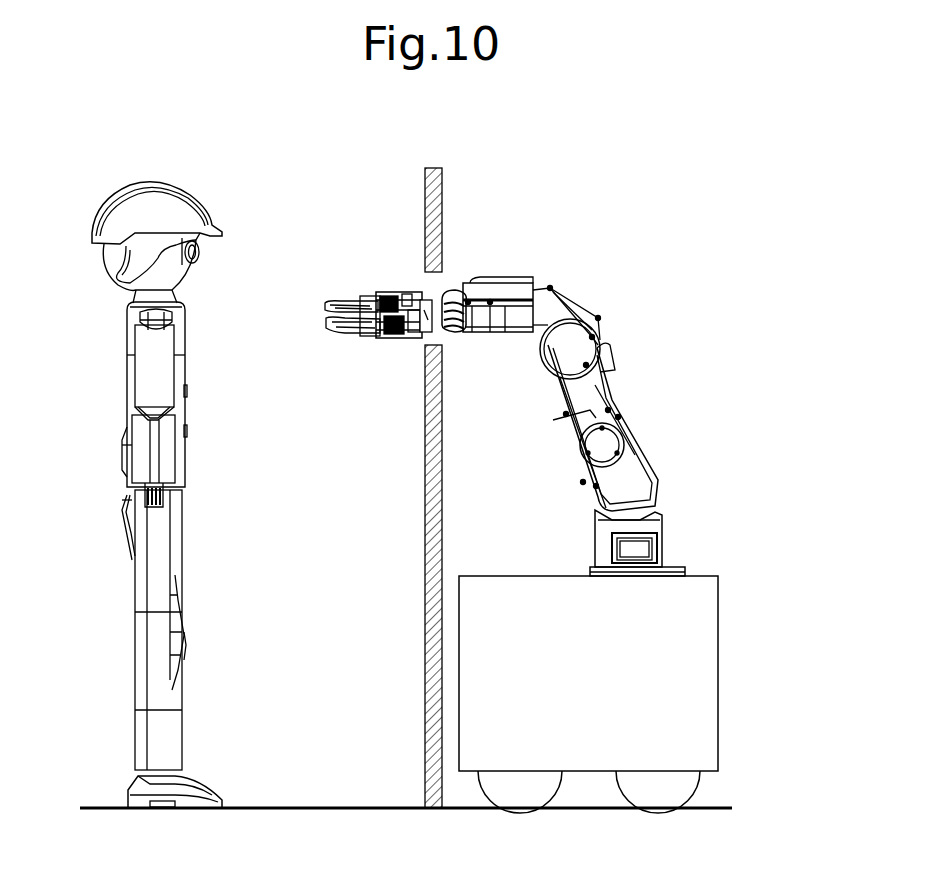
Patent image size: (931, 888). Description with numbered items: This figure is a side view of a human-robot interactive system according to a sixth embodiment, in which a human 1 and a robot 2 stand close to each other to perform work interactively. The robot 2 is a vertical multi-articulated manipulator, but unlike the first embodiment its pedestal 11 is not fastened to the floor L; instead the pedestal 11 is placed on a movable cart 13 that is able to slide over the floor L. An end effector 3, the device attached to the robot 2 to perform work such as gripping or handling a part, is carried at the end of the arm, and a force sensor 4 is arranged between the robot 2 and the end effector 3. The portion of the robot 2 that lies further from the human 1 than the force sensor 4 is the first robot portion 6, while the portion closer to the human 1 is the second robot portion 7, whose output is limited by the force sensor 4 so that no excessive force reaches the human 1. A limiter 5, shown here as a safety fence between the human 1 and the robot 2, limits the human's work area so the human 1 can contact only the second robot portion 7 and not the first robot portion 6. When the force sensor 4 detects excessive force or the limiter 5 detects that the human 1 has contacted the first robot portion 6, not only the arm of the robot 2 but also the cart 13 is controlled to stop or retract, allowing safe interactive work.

The human 1 is at (113, 227).
The robot 2 is at (570, 353).
The end effector 3 is at (377, 305).
The force sensor 4 is at (447, 300).
The limiter 5 is at (443, 175).
The first robot portion 6 is at (718, 795).
The second robot portion 7 is at (422, 345).
The pedestal 11 is at (668, 528).
The cart 13 is at (667, 628).
The floor L is at (300, 807).